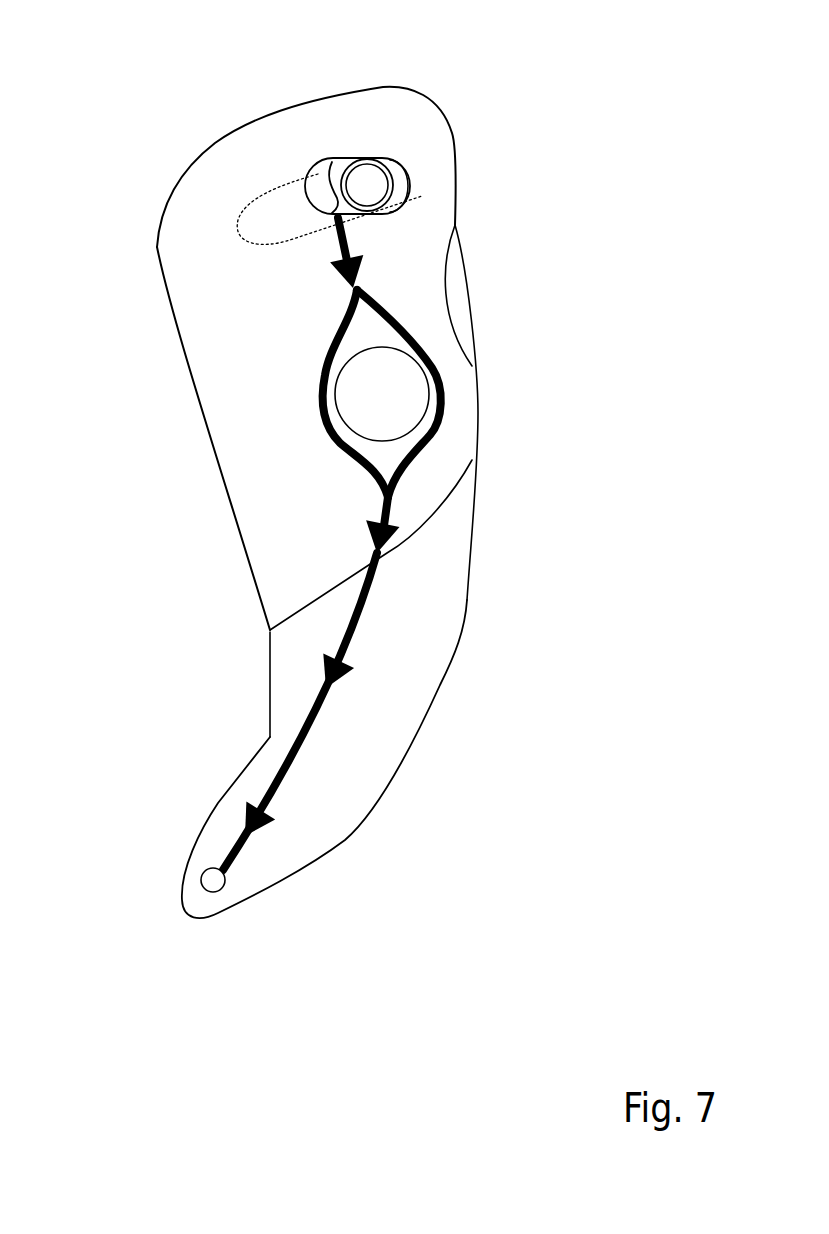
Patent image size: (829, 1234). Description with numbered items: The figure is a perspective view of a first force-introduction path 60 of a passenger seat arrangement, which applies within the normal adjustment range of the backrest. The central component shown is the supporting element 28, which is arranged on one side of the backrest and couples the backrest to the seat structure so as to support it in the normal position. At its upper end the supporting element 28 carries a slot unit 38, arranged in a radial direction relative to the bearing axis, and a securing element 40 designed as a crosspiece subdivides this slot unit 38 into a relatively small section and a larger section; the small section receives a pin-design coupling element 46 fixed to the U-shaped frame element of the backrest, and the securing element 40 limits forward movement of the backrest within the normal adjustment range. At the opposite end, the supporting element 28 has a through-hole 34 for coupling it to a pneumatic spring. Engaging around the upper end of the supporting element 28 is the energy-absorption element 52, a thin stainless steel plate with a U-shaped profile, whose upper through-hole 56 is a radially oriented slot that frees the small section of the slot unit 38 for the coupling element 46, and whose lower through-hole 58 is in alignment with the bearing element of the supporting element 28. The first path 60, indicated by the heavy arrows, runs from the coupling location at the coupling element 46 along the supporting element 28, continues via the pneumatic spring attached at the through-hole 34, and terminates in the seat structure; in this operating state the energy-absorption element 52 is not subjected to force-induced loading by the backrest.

The supporting element 28 is at (380, 707).
The through-hole 34 is at (215, 880).
The slot unit 38 is at (278, 167).
The securing element 40 is at (334, 175).
The coupling element 46 is at (365, 185).
The energy-absorption element 52 is at (277, 483).
The through-hole 56 is at (400, 157).
The through-hole 58 is at (432, 380).
The first path 60 is at (385, 565).